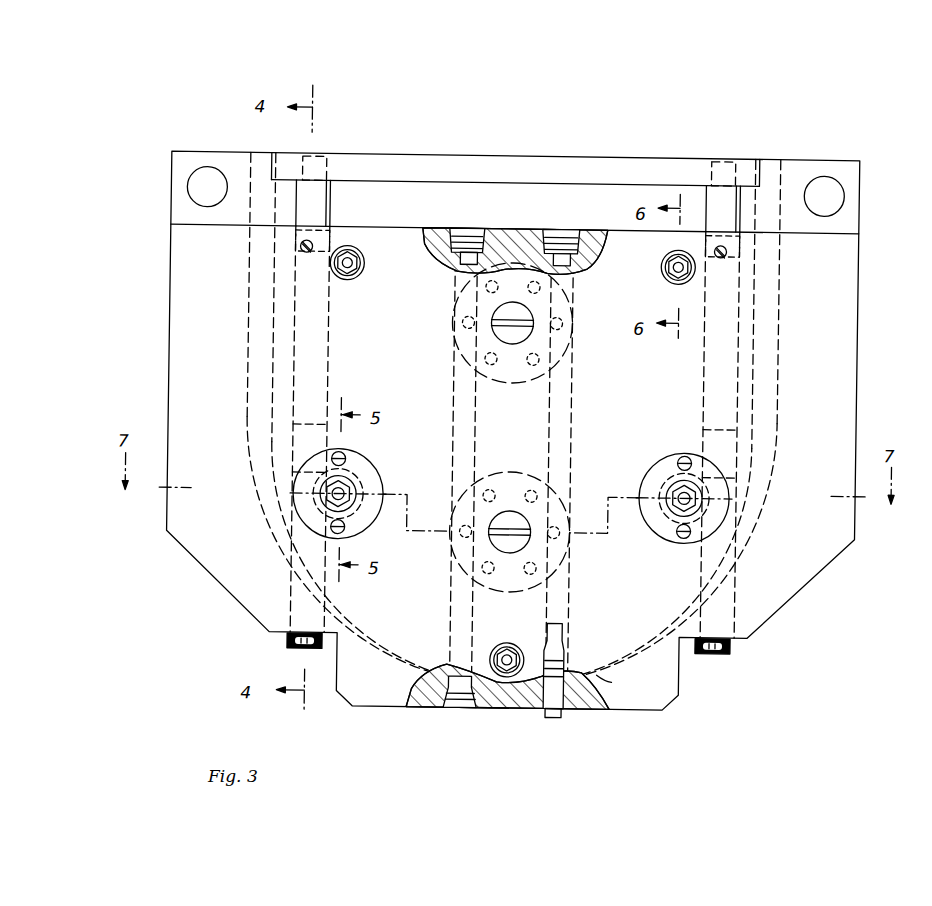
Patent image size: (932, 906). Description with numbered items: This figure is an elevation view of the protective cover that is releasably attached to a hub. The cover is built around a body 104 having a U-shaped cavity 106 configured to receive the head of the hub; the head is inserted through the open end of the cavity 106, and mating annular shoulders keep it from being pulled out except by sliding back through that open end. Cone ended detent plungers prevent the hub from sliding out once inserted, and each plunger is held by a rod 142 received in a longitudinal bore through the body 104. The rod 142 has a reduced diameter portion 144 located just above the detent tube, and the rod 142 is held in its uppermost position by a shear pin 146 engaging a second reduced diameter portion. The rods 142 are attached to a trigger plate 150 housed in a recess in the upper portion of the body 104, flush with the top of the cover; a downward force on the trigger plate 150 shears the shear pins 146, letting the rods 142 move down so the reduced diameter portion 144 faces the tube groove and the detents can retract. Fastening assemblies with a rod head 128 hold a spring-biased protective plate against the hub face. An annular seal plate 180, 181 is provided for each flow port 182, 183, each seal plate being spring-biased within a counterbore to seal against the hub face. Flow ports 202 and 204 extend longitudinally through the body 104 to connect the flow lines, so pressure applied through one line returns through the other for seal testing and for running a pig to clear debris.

The body 104 is at (838, 278).
The U-shaped cavity 106 is at (262, 168).
The head 128 is at (658, 268).
The rod 142 is at (313, 200).
The reduced diameter portion 144 is at (290, 441).
The shear pin 146 is at (297, 241).
The trigger plate 150 is at (527, 158).
The annular seal plate 180 is at (512, 475).
The seal plate 181 is at (498, 372).
The flow port 182 is at (574, 484).
The flow port 183 is at (534, 340).
The flow port 202 is at (460, 677).
The flow port 204 is at (623, 686).